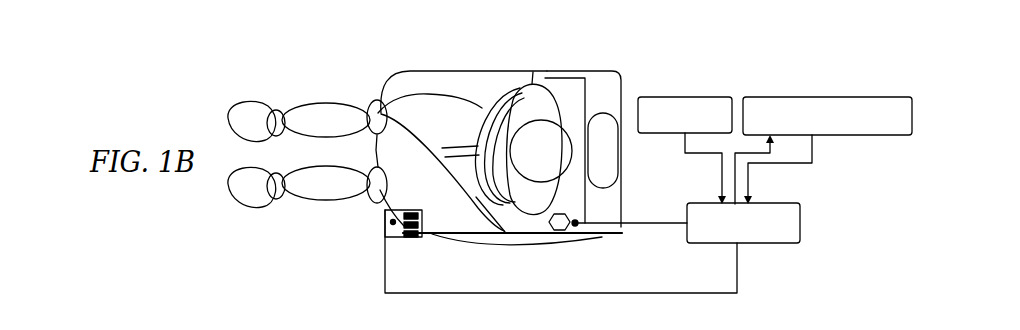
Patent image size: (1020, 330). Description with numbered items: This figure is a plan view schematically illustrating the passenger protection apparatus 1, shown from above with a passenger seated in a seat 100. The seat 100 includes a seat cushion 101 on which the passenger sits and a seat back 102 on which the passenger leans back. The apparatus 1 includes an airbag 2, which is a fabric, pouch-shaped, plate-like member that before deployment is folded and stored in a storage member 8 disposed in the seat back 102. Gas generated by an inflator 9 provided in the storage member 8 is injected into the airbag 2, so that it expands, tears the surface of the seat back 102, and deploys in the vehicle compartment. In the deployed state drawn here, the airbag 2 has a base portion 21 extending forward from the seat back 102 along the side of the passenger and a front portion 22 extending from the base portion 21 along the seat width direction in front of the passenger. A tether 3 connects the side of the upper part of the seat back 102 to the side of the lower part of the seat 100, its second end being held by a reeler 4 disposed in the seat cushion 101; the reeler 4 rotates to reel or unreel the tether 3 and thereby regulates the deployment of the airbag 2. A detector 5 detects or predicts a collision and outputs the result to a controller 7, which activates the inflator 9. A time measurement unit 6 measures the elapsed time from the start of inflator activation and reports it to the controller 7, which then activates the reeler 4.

The passenger protection apparatus 1 is at (370, 46).
The airbag 2 is at (369, 147).
The tether 3 is at (415, 236).
The reeler 4 is at (397, 236).
The detector 5 is at (712, 97).
The time measurement unit 6 is at (818, 97).
The controller 7 is at (772, 203).
The storage member 8 is at (568, 247).
The inflator 9 is at (530, 71).
The base portion 21 is at (492, 243).
The front portion 22 is at (385, 213).
The seat 100 is at (623, 76).
The seat cushion 101 is at (420, 71).
The seat back 102 is at (610, 70).